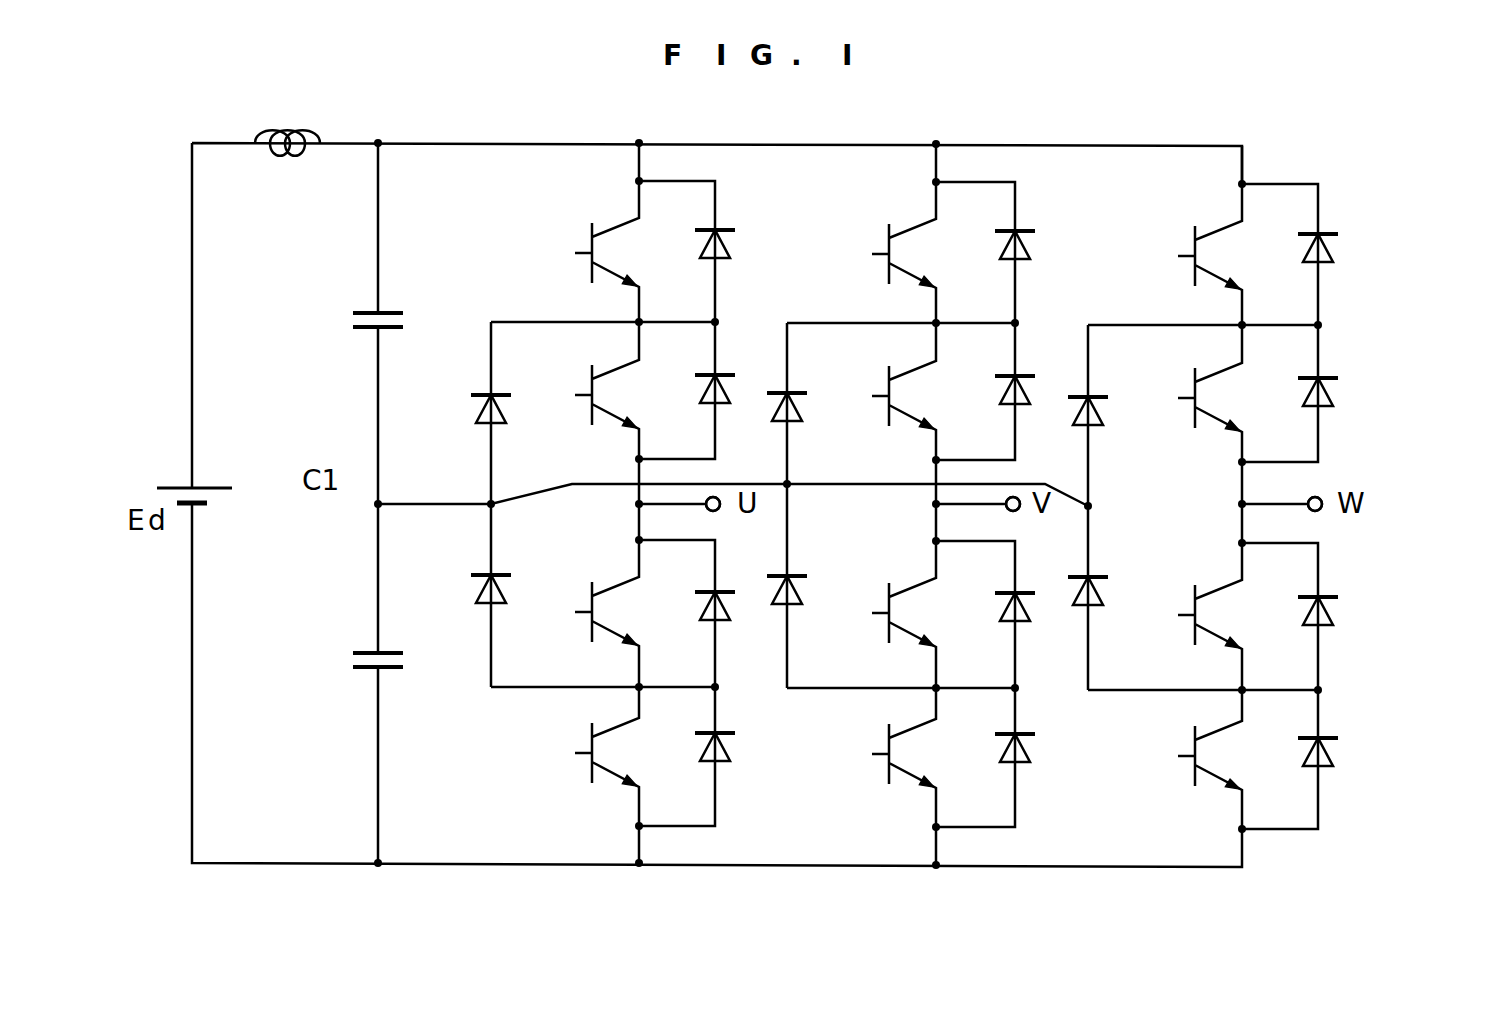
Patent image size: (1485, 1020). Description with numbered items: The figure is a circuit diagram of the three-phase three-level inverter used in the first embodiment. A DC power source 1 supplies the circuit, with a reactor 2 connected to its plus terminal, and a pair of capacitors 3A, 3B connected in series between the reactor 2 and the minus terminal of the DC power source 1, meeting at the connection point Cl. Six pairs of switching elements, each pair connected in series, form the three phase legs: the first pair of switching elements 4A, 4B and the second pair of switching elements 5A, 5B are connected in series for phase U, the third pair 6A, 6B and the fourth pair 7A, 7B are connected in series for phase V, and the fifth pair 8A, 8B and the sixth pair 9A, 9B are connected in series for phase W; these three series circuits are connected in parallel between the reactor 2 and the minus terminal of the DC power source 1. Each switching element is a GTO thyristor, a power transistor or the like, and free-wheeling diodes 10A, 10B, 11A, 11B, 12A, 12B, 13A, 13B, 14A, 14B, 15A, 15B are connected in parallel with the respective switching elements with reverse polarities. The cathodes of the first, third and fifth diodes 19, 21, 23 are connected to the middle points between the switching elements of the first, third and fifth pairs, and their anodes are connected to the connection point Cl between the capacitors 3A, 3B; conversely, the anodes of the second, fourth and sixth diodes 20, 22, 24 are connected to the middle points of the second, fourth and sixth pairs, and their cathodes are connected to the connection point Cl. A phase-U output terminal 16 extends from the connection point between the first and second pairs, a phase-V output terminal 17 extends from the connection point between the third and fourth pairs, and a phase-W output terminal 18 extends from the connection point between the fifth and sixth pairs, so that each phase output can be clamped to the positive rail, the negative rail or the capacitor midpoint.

The DC power source 1 is at (160, 486).
The reactor 2 is at (318, 142).
The capacitor 3A is at (355, 316).
The capacitor 3B is at (356, 654).
The switching element 4A is at (588, 250).
The switching element 4B is at (590, 392).
The switching element 5A is at (590, 612).
The switching element 5B is at (590, 752).
The switching element 6A is at (885, 250).
The switching element 6B is at (888, 394).
The switching element 7A is at (886, 612).
The switching element 7B is at (887, 753).
The switching element 8A is at (1192, 253).
The switching element 8B is at (1192, 398).
The switching element 9A is at (1192, 615).
The switching element 9B is at (1192, 756).
The free-wheeling diode 10A is at (735, 246).
The free-wheeling diode 10B is at (723, 376).
The free-wheeling diode 11A is at (733, 612).
The free-wheeling diode 11B is at (733, 752).
The free-wheeling diode 12A is at (1035, 246).
The free-wheeling diode 12B is at (1022, 377).
The free-wheeling diode 13A is at (1033, 612).
The free-wheeling diode 13B is at (1033, 752).
The free-wheeling diode 14A is at (1338, 248).
The free-wheeling diode 14B is at (1338, 394).
The free-wheeling diode 15A is at (1338, 614).
The free-wheeling diode 15B is at (1338, 755).
The phase-U output terminal 16 is at (718, 510).
The phase-V output terminal 17 is at (1017, 510).
The phase-W output terminal 18 is at (1320, 511).
The first diode 19 is at (482, 418).
The second diode 20 is at (482, 597).
The third diode 21 is at (797, 410).
The fourth diode 22 is at (797, 591).
The fifth diode 23 is at (1098, 413).
The sixth diode 24 is at (1098, 593).